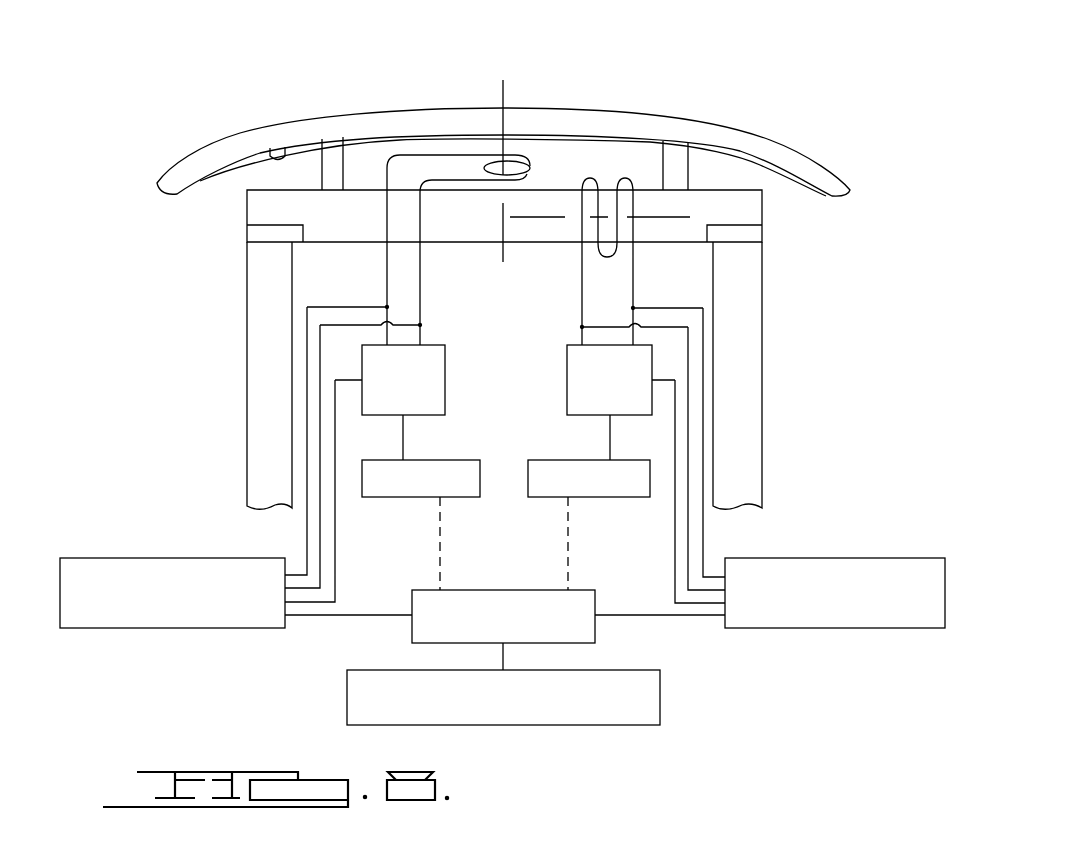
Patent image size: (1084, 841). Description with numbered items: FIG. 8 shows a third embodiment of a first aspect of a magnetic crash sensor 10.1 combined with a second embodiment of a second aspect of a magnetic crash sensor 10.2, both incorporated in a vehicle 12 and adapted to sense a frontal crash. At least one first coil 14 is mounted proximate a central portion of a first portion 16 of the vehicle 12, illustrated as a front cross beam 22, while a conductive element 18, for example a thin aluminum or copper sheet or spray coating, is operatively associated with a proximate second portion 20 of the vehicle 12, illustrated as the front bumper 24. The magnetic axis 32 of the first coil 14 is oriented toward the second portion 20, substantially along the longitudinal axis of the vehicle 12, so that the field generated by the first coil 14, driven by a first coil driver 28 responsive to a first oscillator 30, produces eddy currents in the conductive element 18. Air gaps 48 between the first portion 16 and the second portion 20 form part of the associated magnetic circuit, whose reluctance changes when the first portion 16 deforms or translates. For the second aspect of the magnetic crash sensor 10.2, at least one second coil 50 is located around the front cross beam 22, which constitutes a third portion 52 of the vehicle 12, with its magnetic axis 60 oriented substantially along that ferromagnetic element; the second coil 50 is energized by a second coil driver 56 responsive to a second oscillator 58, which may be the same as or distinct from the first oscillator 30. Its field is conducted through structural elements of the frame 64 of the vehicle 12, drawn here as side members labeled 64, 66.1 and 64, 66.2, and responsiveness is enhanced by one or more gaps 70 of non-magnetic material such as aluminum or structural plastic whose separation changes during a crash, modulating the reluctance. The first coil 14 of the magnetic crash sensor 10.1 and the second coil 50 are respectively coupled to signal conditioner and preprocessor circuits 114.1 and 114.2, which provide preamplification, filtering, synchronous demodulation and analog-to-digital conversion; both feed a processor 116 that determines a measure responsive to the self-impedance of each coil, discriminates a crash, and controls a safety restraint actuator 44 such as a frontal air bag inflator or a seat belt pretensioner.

The magnetic crash sensor 10.1 is at (865, 56).
The magnetic crash sensor 10.2 is at (795, 100).
The vehicle 12 is at (200, 112).
The first coil 14 is at (530, 163).
The first portion of the vehicle 16 is at (455, 218).
The conductive element 18 is at (282, 147).
The second portion of the vehicle 20 is at (470, 82).
The front cross beam 22 is at (647, 243).
The front bumper 24 is at (713, 116).
The first coil driver 28 is at (445, 405).
The first oscillator 30 is at (425, 498).
The magnetic axis 32 is at (500, 131).
The safety restraint actuator 44 is at (640, 713).
The air gaps 48 is at (375, 180).
The second coil 50 is at (627, 178).
The third portion of the vehicle 52 is at (575, 250).
The second coil driver 56 is at (567, 378).
The second oscillator 58 is at (592, 498).
The magnetic axis 60 is at (553, 217).
The frame 64 is at (363, 243).
The first conductor 66.1 is at (263, 437).
The second conductor 66.2 is at (743, 437).
The gaps 70 is at (248, 234).
The signal conditioner and preprocessor circuit 114.1 is at (213, 624).
The signal conditioner and preprocessor circuit 114.2 is at (797, 624).
The processor 116 is at (430, 628).